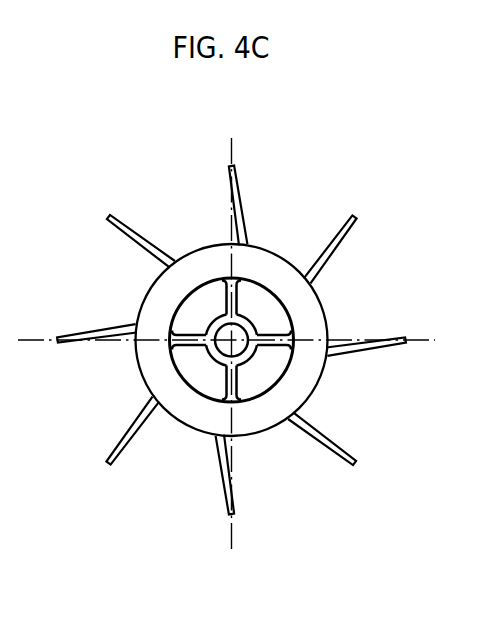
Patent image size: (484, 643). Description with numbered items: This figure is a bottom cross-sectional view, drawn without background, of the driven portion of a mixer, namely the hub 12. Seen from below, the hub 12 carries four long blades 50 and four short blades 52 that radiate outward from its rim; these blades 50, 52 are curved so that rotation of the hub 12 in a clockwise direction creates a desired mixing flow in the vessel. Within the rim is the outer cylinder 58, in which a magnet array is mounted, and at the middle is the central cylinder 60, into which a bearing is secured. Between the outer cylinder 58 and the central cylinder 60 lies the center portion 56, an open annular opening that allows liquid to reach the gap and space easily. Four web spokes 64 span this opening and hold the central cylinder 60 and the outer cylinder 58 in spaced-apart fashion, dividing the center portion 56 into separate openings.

The hub 12 is at (147, 498).
The long blades 50 is at (335, 238).
The short blades 52 is at (237, 190).
The center portion 56 is at (273, 365).
The outer cylinder 58 is at (305, 308).
The central cylinder 60 is at (249, 329).
The web spokes 64 is at (185, 340).